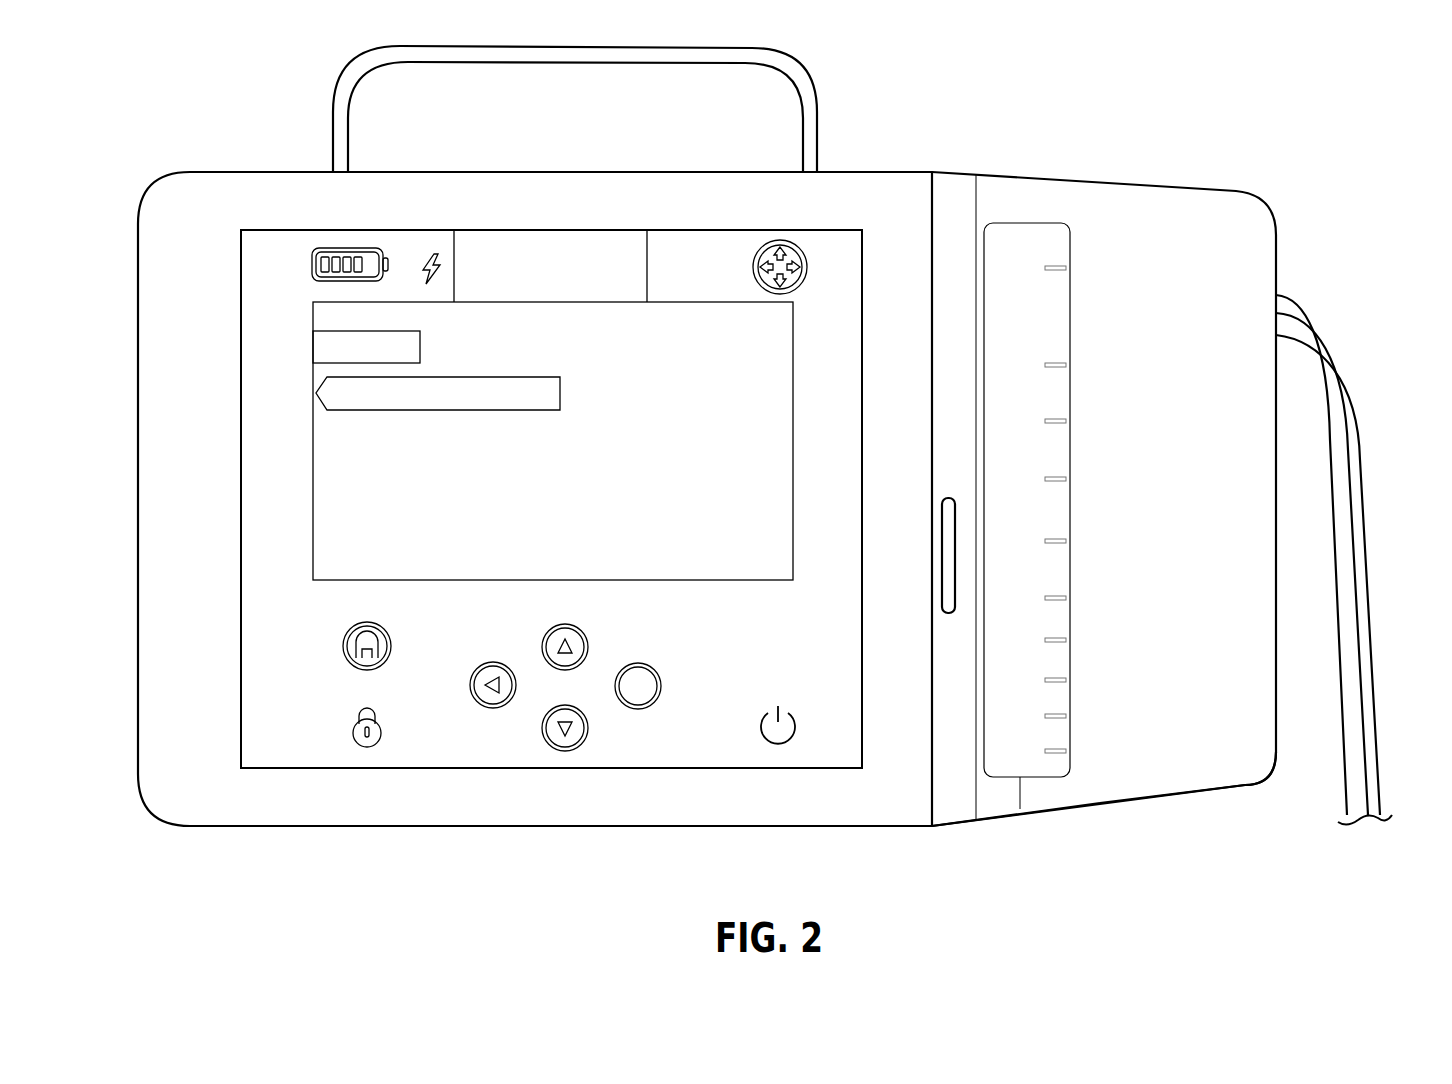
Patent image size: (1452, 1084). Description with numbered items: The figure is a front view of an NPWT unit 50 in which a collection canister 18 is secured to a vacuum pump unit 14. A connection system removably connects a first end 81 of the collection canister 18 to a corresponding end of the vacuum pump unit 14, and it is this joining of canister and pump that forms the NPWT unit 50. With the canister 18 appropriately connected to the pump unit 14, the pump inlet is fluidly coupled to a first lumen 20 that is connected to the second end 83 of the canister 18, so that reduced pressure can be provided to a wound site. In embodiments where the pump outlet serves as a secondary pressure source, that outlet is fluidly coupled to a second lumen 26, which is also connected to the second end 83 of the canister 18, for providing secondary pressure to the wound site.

The NPWT unit 50 is at (252, 95).
The vacuum pump unit 14 is at (862, 200).
The collection canister 18 is at (1173, 337).
The first lumen 20 is at (1325, 350).
The second lumen 26 is at (1340, 678).
The first end 81 is at (958, 760).
The second end 83 is at (1247, 743).